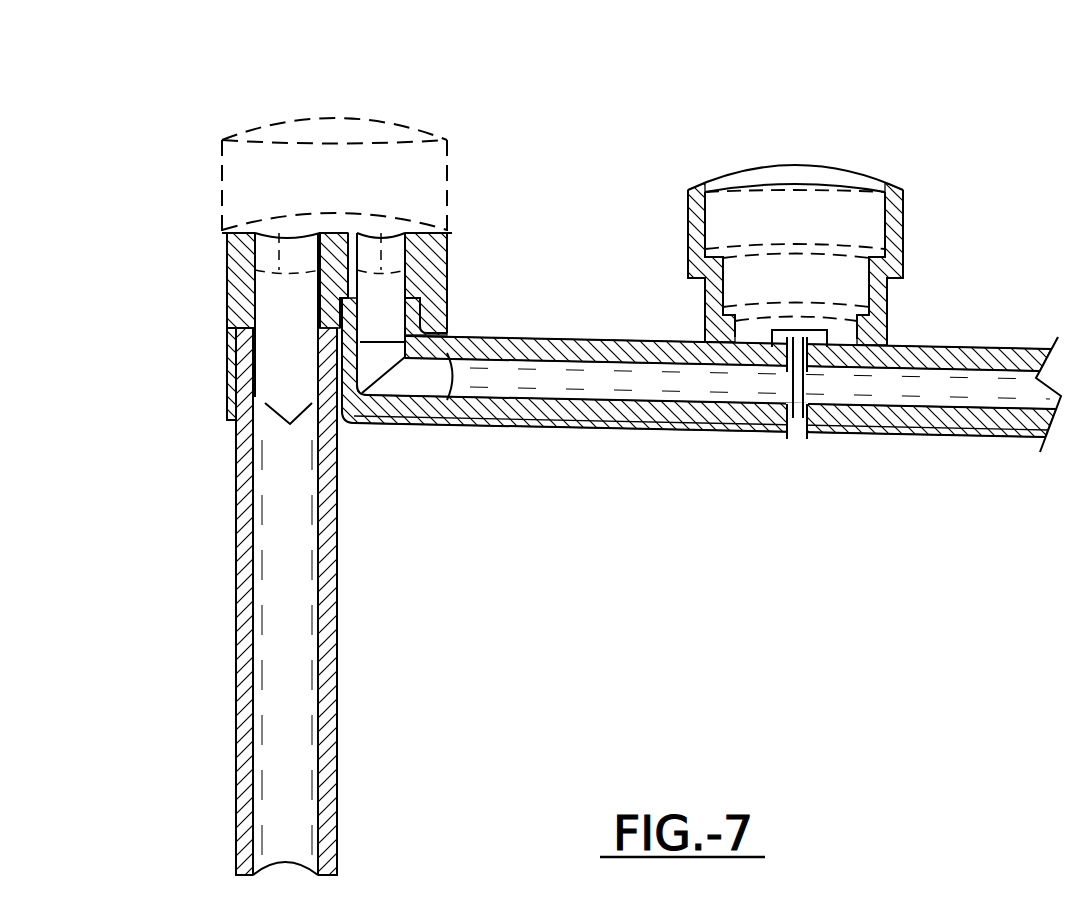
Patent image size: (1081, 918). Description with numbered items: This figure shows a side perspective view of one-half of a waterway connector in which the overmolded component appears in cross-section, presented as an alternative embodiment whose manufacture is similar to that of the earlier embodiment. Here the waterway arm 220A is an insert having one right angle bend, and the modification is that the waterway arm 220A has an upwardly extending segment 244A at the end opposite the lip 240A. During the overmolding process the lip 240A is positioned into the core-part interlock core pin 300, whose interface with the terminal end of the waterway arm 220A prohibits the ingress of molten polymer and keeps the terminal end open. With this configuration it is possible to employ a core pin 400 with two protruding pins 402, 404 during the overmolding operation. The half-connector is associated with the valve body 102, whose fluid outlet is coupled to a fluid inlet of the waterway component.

The core pin 400 is at (229, 112).
The protruding pin 402 is at (273, 318).
The protruding pin 404 is at (387, 295).
The upwardly extending segment 244A is at (422, 320).
The waterway arm 220A is at (625, 413).
The lip 240A is at (784, 340).
The core-part interlock core pin 300 is at (877, 150).
The valve body 102 is at (237, 612).